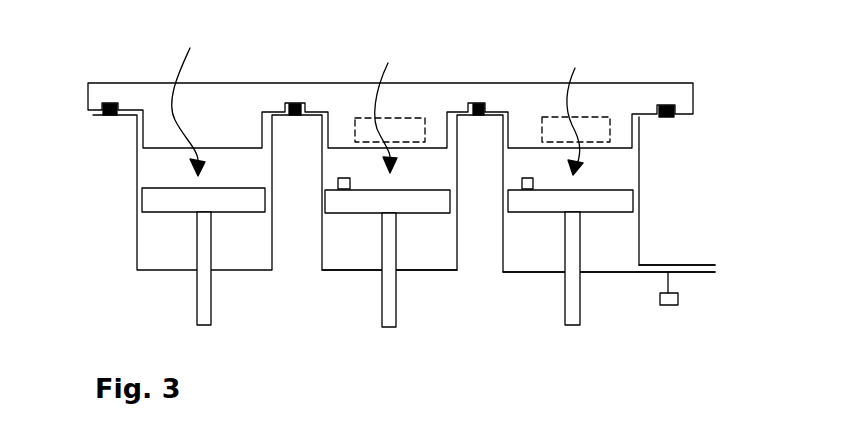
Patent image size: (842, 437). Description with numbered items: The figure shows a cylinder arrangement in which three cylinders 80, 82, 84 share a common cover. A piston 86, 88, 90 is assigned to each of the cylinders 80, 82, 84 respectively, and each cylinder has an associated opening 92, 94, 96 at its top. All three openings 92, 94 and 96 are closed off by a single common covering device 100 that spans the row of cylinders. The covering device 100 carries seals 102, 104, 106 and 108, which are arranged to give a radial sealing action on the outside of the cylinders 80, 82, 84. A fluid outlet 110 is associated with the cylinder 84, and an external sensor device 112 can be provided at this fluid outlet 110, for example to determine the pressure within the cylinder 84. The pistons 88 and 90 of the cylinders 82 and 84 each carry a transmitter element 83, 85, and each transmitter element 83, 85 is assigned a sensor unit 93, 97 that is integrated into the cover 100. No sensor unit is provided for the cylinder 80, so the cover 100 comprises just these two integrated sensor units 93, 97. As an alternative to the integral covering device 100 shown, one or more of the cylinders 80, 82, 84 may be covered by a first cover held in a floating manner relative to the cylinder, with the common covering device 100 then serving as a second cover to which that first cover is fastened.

The cylinder 80 is at (137, 252).
The cylinder 82 is at (325, 270).
The transmitter element 83 is at (338, 184).
The cylinder 84 is at (536, 273).
The transmitter element 85 is at (522, 183).
The piston 86 is at (163, 195).
The piston 88 is at (441, 212).
The piston 90 is at (606, 206).
The opening 92 is at (181, 97).
The sensor unit 93 is at (365, 120).
The opening 94 is at (391, 98).
The opening 96 is at (577, 101).
The sensor unit 97 is at (560, 120).
The covering device 100 is at (640, 95).
The seal 102 is at (105, 108).
The seal 104 is at (296, 104).
The seal 106 is at (478, 103).
The seal 108 is at (672, 117).
The fluid outlet 110 is at (662, 265).
The external sensor device 112 is at (670, 305).